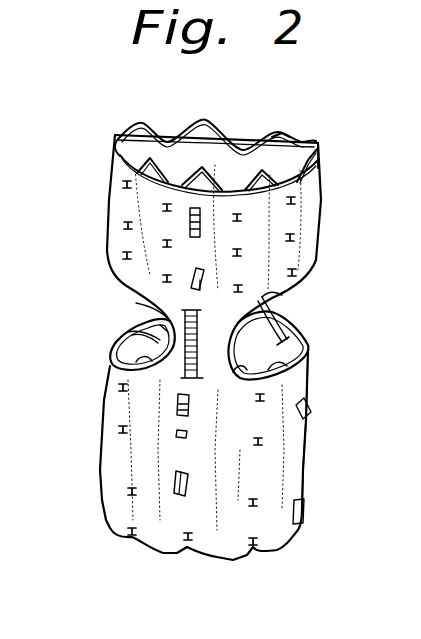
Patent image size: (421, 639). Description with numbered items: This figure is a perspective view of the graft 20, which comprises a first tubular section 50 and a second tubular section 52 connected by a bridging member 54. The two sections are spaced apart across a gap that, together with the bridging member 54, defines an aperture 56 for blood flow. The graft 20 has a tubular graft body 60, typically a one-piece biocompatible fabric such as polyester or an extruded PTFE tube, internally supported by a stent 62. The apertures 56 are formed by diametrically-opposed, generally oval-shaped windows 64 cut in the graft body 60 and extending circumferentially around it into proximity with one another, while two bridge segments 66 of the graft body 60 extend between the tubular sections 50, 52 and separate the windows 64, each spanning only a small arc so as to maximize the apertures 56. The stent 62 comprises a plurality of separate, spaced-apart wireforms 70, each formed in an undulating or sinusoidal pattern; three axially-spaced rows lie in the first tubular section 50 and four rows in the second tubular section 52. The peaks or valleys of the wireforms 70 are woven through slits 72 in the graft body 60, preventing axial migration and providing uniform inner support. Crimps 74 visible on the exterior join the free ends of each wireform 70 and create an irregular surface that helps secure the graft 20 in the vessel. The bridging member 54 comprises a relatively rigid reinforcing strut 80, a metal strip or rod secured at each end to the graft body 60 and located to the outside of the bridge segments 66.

The graft 20 is at (108, 121).
The first tubular section 50 is at (80, 116).
The second tubular section 52 is at (76, 348).
The bridging member 54 is at (160, 356).
The aperture 56 is at (136, 303).
The tubular graft body 60 is at (296, 476).
The stent 62 is at (214, 118).
The window 64 is at (282, 295).
The bridge segment 66 is at (222, 352).
The wireform 70 is at (284, 132).
The slit 72 is at (250, 503).
The crimp 74 is at (182, 480).
The reinforcing strut 80 is at (222, 332).